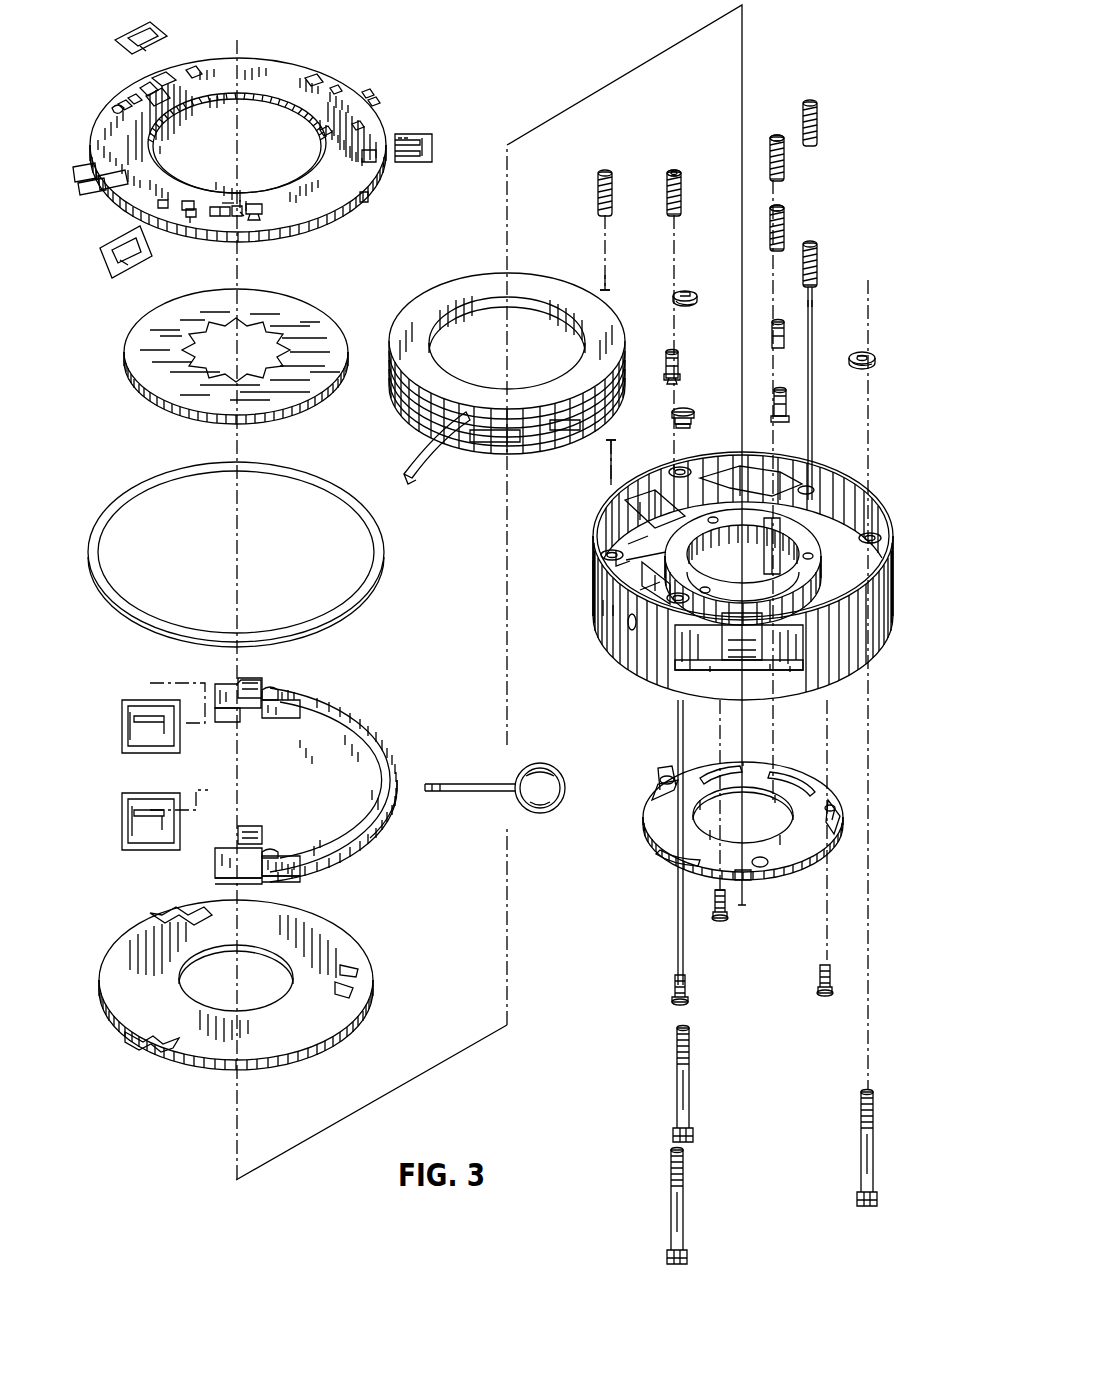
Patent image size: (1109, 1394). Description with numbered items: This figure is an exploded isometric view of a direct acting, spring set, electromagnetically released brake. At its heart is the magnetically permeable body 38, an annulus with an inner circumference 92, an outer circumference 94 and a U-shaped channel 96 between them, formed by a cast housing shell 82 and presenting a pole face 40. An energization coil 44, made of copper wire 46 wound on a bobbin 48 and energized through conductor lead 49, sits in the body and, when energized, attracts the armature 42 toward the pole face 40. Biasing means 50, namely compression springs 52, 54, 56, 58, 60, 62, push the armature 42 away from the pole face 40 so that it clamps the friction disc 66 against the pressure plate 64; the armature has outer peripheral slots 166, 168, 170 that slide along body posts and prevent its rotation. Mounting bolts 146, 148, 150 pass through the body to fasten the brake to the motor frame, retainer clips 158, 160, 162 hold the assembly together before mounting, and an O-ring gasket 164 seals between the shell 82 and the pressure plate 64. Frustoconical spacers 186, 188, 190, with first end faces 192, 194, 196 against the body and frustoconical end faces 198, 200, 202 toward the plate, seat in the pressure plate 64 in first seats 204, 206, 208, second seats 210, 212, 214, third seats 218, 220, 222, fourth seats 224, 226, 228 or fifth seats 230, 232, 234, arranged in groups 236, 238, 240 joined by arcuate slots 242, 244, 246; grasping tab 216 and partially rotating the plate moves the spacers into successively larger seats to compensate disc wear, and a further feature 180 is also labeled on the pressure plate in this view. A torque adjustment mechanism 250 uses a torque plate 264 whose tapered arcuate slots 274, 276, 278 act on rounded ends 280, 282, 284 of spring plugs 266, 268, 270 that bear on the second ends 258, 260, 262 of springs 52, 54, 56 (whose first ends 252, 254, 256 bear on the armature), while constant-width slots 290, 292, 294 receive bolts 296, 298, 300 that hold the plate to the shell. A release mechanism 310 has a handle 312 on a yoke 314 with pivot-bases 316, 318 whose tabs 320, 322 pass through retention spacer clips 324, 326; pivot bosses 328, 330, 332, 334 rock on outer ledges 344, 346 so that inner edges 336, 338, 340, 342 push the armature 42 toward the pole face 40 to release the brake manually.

The magnetically permeable body 38 is at (838, 512).
The pole face 40 is at (740, 530).
The armature 42 is at (367, 960).
The energization coil 44 is at (456, 286).
The copper wire 46 is at (560, 458).
The bobbin 48 is at (590, 436).
The conductor lead 49 is at (424, 470).
The biasing means 50 is at (669, 152).
The compression spring 52 is at (775, 160).
The compression spring 54 is at (777, 210).
The compression spring 56 is at (683, 192).
The compression spring 58 is at (818, 128).
The compression spring 60 is at (818, 262).
The compression spring 62 is at (598, 196).
The pressure plate 64 is at (330, 72).
The friction disc 66 is at (324, 396).
The housing shell 82 is at (600, 636).
The inner circumference 92 is at (648, 540).
The outer circumference 94 is at (628, 582).
The U-shaped channel 96 is at (650, 582).
The mounting bolt 146 is at (860, 1170).
The mounting bolt 148 is at (686, 1206).
The mounting bolt 150 is at (691, 1120).
The retainer clip 158 is at (120, 34).
The retainer clip 160 is at (430, 134).
The retainer clip 162 is at (134, 274).
The sealing O-ring gasket 164 is at (344, 612).
The outer peripheral slot 166 is at (190, 916).
The outer peripheral slot 168 is at (374, 992).
The outer peripheral slot 170 is at (158, 1052).
The pad 180 is at (340, 90).
The spacer 186 is at (864, 352).
The spacer 188 is at (686, 412).
The spacer 190 is at (689, 290).
The first end face 192 is at (866, 366).
The first end face 194 is at (688, 425).
The first end face 196 is at (683, 304).
The frustoconical end face 198 is at (860, 354).
The frustoconical end face 200 is at (636, 462).
The frustoconical end face 202 is at (629, 282).
The first seat 204 is at (374, 166).
The first seat 206 is at (160, 205).
The first seat 208 is at (193, 72).
The second seat 210 is at (358, 128).
The second seat 212 is at (191, 220).
The second seat 214 is at (164, 80).
The tab 216 is at (84, 170).
The third seat 218 is at (373, 103).
The third seat 220 is at (228, 218).
The third seat 222 is at (117, 110).
The fourth seat 224 is at (371, 95).
The fourth seat 226 is at (244, 216).
The fourth seat 228 is at (122, 107).
The fifth seat 230 is at (334, 86).
The fifth seat 232 is at (254, 206).
The fifth seat 234 is at (163, 150).
The first group of seats 236 is at (322, 134).
The second group of seats 238 is at (228, 202).
The third group of seats 240 is at (160, 104).
The arcuate slot 242 is at (365, 200).
The arcuate slot 244 is at (186, 205).
The arcuate slot 246 is at (108, 178).
The torque adjustment mechanism 250 is at (668, 886).
The first end 252 is at (778, 136).
The first end 254 is at (784, 208).
The first end 256 is at (676, 168).
The second end 258 is at (786, 180).
The second end 260 is at (786, 250).
The second end 262 is at (676, 218).
The torque plate 264 is at (648, 826).
The spring plug 266 is at (776, 325).
The spring plug 268 is at (787, 398).
The spring plug 270 is at (679, 358).
The arcuate slot of tapered radial width 274 is at (802, 770).
The arcuate slot of tapered radial width 276 is at (758, 880).
The arcuate slot of tapered radial width 278 is at (656, 800).
The rounded end 280 is at (781, 348).
The rounded end 282 is at (783, 420).
The rounded end 284 is at (681, 376).
The arcuate slot of constant radial width 290 is at (834, 834).
The arcuate slot of constant radial width 292 is at (658, 856).
The arcuate slot of constant radial width 294 is at (758, 760).
The bolt 296 is at (820, 996).
The bolt 298 is at (672, 1004).
The bolt 300 is at (716, 920).
The release mechanism 310 is at (332, 683).
The handle 312 is at (478, 785).
The yoke 314 is at (394, 745).
The pivot-base 316 is at (262, 882).
The pivot-base 318 is at (256, 700).
The tab 320 is at (258, 826).
The tab 322 is at (232, 722).
The retention spacer clip 324 is at (146, 856).
The retention spacer clip 326 is at (150, 756).
The pivot boss 328 is at (282, 856).
The pivot boss 330 is at (214, 848).
The pivot boss 332 is at (290, 665).
The pivot boss 334 is at (226, 684).
The inner edge 336 is at (278, 850).
The inner edge 338 is at (236, 808).
The inner edge 340 is at (280, 718).
The inner edge 342 is at (212, 700).
The outer ledge 344 is at (712, 672).
The outer ledge 346 is at (736, 482).